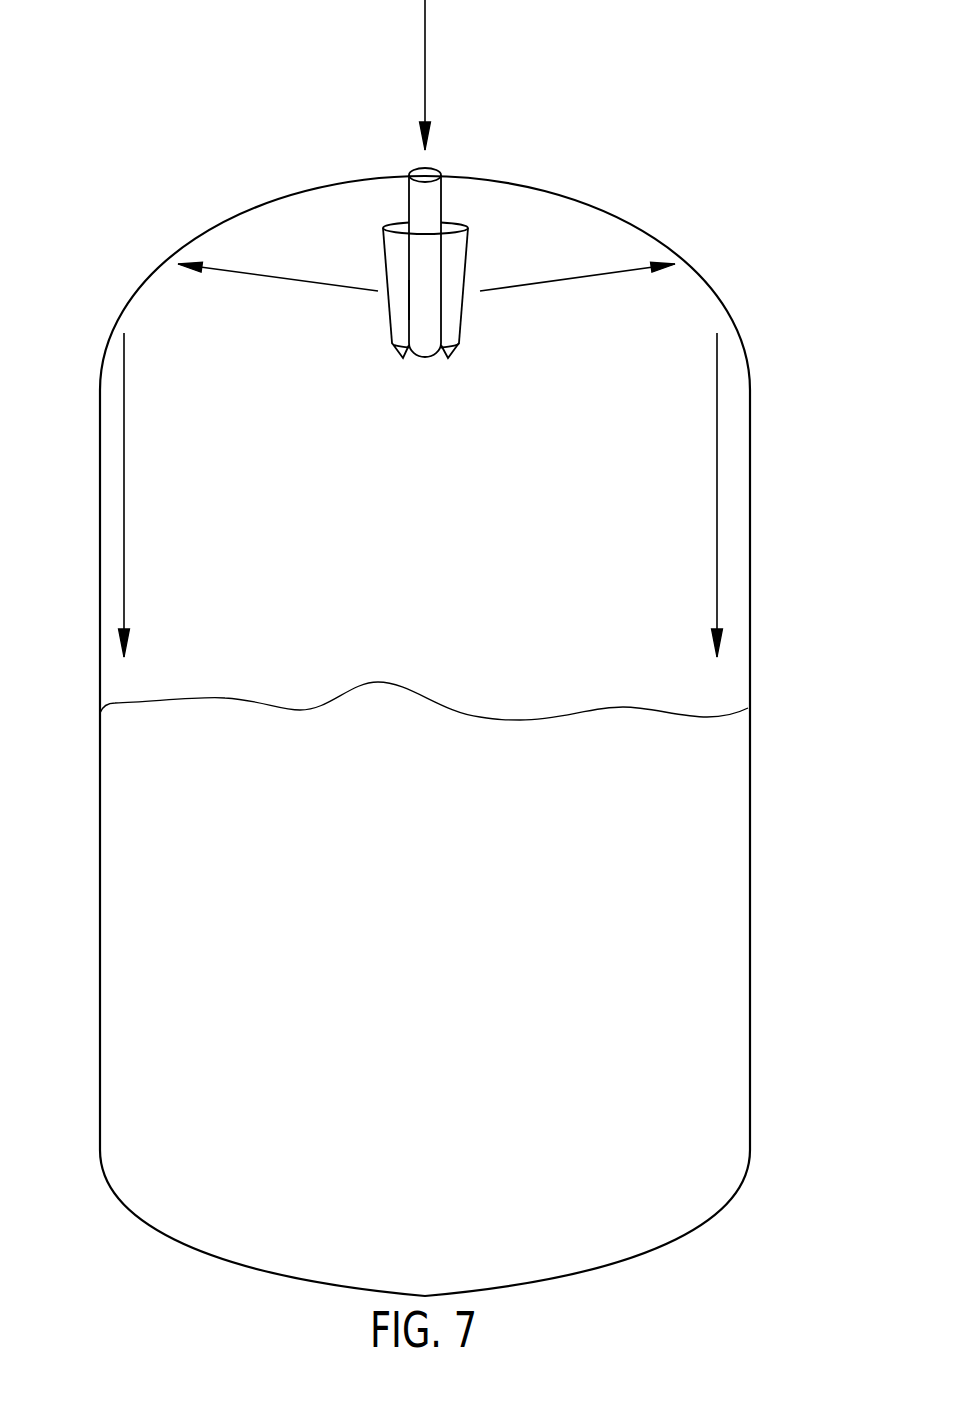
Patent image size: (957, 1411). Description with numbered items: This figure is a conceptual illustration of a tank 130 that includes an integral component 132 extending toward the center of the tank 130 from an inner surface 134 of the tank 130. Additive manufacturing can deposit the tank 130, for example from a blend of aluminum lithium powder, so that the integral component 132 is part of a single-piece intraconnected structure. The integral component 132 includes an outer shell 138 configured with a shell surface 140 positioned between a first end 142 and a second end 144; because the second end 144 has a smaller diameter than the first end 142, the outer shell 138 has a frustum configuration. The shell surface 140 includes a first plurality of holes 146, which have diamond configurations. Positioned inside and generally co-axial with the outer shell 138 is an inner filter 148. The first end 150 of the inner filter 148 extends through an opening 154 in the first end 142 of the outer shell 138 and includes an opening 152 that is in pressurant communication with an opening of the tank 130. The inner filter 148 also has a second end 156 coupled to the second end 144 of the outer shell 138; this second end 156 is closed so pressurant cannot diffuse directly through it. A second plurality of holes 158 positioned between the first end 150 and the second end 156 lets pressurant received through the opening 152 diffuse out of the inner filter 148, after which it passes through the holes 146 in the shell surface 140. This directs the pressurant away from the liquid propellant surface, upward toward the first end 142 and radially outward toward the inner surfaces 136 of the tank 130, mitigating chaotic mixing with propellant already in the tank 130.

The tank 130 is at (145, 260).
The integral component 132 is at (388, 337).
The inner surface 134 is at (360, 179).
The inner surfaces 136 is at (690, 280).
The outer shell 138 is at (472, 317).
The shell surface 140 is at (453, 325).
The first end 142 is at (458, 208).
The second end 144 is at (418, 372).
The first plurality of holes 146 is at (463, 266).
The inner filter 148 is at (425, 295).
The first end 150 is at (403, 182).
The opening 152 is at (438, 157).
The opening 154 is at (417, 207).
The second end 156 is at (427, 343).
The second plurality of holes 158 is at (425, 280).